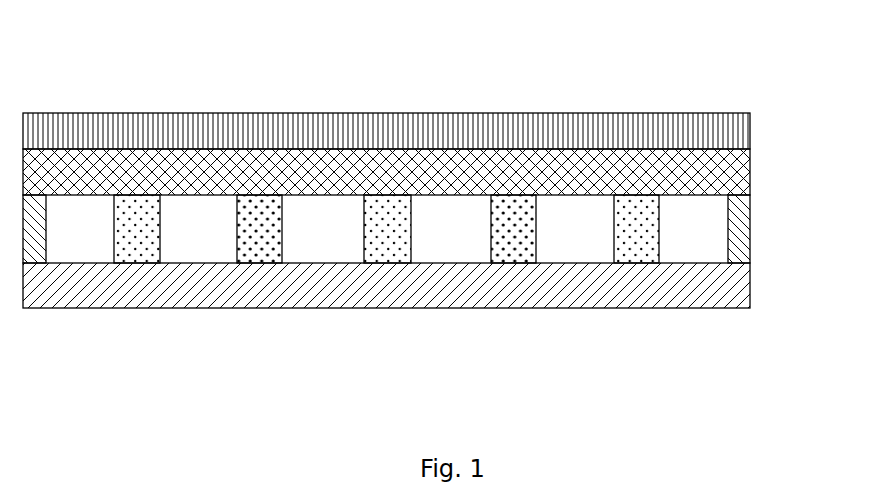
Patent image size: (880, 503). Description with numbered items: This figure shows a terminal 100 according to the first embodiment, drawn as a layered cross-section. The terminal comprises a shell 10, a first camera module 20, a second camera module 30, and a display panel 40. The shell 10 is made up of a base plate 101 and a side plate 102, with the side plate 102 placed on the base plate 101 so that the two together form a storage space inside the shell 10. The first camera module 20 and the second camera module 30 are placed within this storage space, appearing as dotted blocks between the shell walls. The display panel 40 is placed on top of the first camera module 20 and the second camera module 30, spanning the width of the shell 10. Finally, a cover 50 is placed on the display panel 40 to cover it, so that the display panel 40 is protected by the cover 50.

The display panel / device 100 is at (429, 50).
The cover 50 is at (727, 135).
The display panel 40 is at (718, 178).
The shell 10 is at (424, 251).
The base plate 101 is at (735, 229).
The side plate 102 is at (727, 293).
The first camera module 20 is at (515, 230).
The second camera module 30 is at (636, 240).